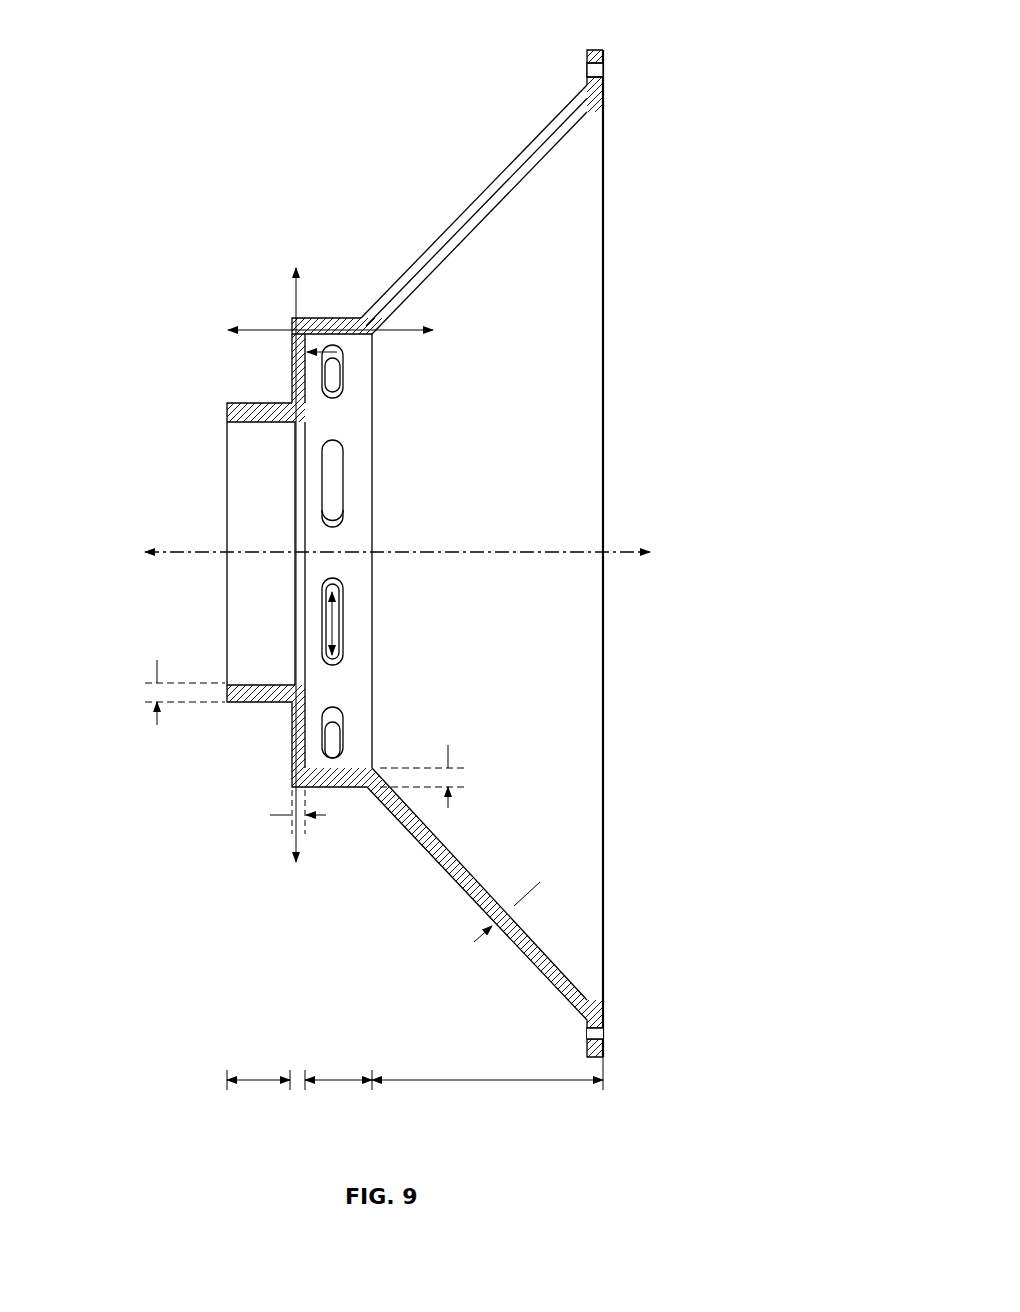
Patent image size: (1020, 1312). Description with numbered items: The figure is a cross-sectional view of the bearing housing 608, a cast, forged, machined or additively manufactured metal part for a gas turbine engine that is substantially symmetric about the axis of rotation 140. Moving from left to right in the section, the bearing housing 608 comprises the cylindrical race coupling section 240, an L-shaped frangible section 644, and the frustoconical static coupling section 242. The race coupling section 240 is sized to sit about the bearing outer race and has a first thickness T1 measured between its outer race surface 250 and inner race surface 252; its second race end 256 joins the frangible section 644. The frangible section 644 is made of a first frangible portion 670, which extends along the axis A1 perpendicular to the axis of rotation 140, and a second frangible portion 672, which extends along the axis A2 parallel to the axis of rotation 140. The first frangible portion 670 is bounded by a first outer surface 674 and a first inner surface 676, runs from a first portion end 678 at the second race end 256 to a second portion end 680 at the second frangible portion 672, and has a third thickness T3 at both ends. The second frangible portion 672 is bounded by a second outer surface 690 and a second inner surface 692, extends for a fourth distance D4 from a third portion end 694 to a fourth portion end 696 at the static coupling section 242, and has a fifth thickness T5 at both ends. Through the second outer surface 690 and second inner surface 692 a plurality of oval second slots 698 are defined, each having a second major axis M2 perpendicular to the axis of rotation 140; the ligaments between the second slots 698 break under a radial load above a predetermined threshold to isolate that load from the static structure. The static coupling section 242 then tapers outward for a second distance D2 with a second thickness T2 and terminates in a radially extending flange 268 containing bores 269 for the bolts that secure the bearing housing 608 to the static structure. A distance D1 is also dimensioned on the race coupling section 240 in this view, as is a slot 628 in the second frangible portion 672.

The axis of rotation 140 is at (630, 532).
The race coupling section 240 is at (213, 572).
The static coupling section 242 is at (505, 132).
The outer race surface 250 is at (273, 703).
The inner race surface 252 is at (252, 684).
The second race end 256 is at (276, 684).
The flange 268 is at (596, 52).
The bores 269 is at (604, 70).
The bearing housing 608 is at (692, 100).
The slot 628 is at (345, 487).
The frangible section 644 is at (315, 290).
The first frangible portion 670 is at (273, 367).
The second frangible portion 672 is at (360, 290).
The first outer surface 674 is at (300, 780).
The first inner surface 676 is at (312, 765).
The first portion end 678 is at (306, 690).
The second portion end 680 is at (300, 790).
The second outer surface 690 is at (364, 322).
The second inner surface 692 is at (345, 352).
The third portion end 694 is at (288, 353).
The fourth portion end 696 is at (386, 338).
The second slots 698 is at (345, 640).
The axis A1 is at (296, 296).
The axis A2 is at (425, 338).
The first thickness T1 is at (157, 662).
The second thickness T2 is at (530, 892).
The third thickness T3 is at (281, 818).
The fifth thickness T5 is at (490, 742).
The second major axis M2 is at (345, 620).
The distance D1 is at (258, 1080).
The second distance D2 is at (520, 1080).
The fourth distance D4 is at (338, 1080).